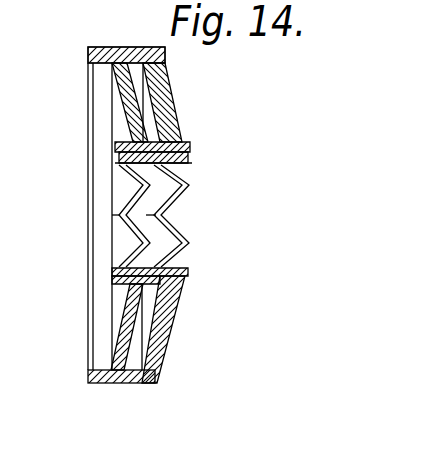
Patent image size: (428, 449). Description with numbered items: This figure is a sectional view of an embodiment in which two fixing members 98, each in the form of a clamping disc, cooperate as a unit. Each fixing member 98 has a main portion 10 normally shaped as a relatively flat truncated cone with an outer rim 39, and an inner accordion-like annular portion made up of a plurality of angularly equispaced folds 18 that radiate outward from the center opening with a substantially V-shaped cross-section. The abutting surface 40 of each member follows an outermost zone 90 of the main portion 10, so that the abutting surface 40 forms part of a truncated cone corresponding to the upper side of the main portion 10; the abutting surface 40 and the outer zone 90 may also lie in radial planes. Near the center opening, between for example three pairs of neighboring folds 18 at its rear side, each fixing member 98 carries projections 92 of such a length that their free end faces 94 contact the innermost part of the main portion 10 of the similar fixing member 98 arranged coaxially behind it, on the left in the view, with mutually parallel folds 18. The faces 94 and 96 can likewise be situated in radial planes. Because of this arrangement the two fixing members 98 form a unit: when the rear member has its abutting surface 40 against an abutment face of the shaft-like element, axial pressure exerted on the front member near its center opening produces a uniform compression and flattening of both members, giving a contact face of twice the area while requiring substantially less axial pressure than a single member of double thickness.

The abutting surface 40 is at (87, 61).
The fixing member 98 is at (136, 40).
The outermost zone 90 is at (167, 56).
The main portion 10 is at (173, 108).
The projections 92 is at (122, 146).
The face 96 is at (189, 159).
The folds 18 is at (180, 192).
The free end faces 94 is at (112, 269).
The outer rim 39 is at (150, 384).